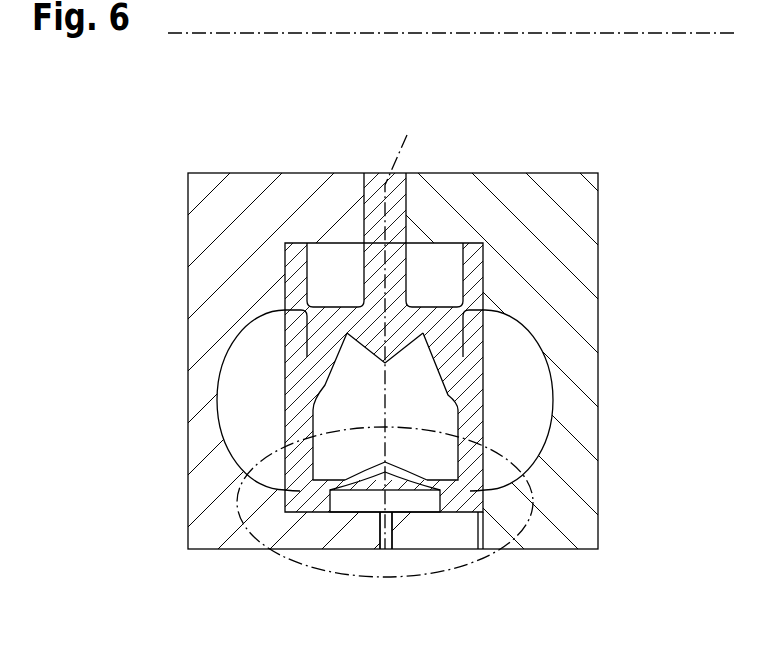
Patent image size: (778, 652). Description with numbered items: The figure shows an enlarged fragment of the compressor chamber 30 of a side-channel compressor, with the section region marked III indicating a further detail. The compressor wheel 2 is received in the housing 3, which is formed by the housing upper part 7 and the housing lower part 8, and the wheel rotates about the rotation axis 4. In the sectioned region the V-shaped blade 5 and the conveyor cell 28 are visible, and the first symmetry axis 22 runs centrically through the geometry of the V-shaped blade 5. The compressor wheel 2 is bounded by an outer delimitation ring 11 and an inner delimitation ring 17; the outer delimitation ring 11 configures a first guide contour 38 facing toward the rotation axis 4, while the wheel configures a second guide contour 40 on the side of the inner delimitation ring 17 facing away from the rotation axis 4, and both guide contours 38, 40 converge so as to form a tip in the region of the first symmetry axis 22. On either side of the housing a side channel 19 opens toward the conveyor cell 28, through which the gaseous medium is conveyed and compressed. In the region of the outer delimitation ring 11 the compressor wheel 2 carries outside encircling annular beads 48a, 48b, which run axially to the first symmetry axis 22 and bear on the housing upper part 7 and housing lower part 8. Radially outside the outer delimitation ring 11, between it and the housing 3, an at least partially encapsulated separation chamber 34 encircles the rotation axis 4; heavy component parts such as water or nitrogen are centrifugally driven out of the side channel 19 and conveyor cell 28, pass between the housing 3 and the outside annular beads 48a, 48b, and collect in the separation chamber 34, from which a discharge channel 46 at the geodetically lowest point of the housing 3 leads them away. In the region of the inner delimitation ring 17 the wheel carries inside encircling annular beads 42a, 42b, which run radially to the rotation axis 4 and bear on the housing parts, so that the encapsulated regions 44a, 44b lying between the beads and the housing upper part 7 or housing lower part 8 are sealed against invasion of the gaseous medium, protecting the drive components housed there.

The compressor wheel 2 is at (378, 173).
The housing 3 is at (389, 358).
The rotation axis 4 is at (722, 33).
The V-shaped blade 5 is at (313, 358).
The housing upper part 7 is at (557, 210).
The housing lower part 8 is at (212, 210).
The outer delimitation ring 11 is at (313, 443).
The inner delimitation ring 17 is at (335, 303).
The side channel 19 is at (240, 384).
The first symmetry axis 22 is at (404, 325).
The conveyor cell 28 is at (400, 391).
The compressor chamber 30 is at (118, 137).
The separation chamber 34 is at (407, 500).
The first guide contour 38 is at (387, 461).
The second guide contour 40 is at (388, 366).
The inside encircling annular bead 42a is at (295, 252).
The inside encircling annular bead 42b is at (475, 252).
The encapsulated region 44a is at (333, 263).
The encapsulated region 44b is at (437, 263).
The discharge channel 46 is at (387, 538).
The outside encircling annular bead 48a is at (325, 497).
The outside encircling annular bead 48b is at (445, 495).
The detail section III is at (277, 552).